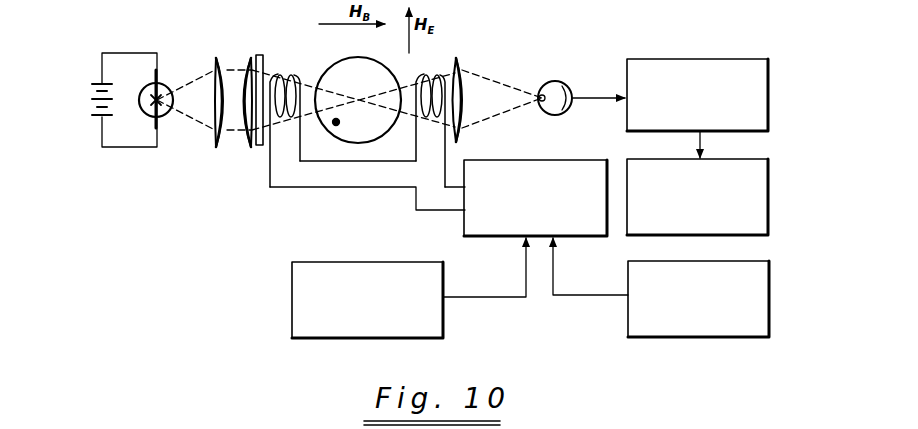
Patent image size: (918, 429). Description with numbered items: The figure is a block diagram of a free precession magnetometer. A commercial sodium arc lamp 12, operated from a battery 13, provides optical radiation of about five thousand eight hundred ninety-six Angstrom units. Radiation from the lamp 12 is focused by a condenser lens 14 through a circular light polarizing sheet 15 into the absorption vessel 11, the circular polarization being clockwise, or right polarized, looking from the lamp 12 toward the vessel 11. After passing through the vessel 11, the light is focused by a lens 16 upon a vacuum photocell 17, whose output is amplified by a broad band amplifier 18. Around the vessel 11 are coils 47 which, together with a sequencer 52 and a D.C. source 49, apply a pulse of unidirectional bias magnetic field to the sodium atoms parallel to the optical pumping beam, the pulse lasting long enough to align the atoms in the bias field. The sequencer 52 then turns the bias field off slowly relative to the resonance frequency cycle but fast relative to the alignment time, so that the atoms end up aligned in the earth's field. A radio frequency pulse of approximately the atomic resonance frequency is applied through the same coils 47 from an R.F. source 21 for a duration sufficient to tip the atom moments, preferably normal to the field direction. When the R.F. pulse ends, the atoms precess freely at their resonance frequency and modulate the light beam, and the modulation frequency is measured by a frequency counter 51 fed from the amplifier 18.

The absorption vessel 11 is at (370, 70).
The sodium arc lamp 12 is at (164, 87).
The battery 13 is at (84, 97).
The condenser lens 14 is at (222, 60).
The circular light polarizing sheet 15 is at (268, 64).
The lens 16 is at (462, 66).
The vacuum photocell 17 is at (556, 81).
The broad band amplifier 18 is at (697, 60).
The R.F. source 21 is at (372, 262).
The coils 47 is at (285, 77).
The D.C. source 49 is at (633, 310).
The frequency counter 51 is at (762, 198).
The sequencer 52 is at (540, 160).